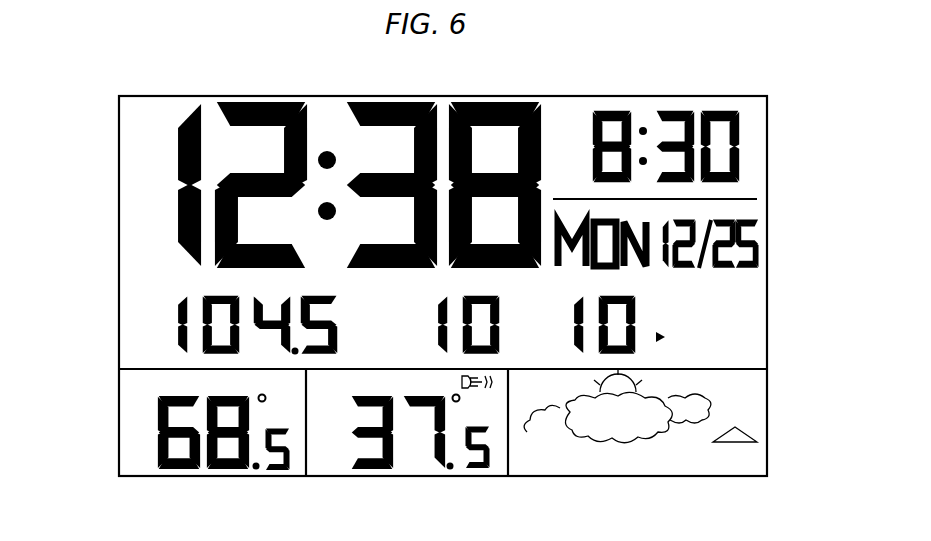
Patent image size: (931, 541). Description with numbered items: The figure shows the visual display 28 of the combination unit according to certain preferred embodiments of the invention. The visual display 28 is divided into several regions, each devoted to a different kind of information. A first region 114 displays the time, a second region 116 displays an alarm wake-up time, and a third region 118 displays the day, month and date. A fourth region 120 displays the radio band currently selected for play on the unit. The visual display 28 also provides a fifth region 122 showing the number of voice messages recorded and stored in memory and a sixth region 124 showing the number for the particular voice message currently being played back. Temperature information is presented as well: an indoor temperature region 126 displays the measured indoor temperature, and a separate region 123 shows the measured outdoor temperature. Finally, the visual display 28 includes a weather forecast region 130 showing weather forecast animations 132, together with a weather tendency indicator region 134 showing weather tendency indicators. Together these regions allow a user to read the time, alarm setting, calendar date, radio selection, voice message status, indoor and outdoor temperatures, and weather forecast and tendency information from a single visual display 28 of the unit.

The visual display 28 is at (41, 193).
The first region 114 is at (322, 108).
The second region 116 is at (752, 116).
The third region 118 is at (756, 234).
The fourth region 120 is at (153, 303).
The fifth region 122 is at (503, 302).
The outdoor temperature display 123 is at (325, 468).
The sixth region 124 is at (650, 309).
The indoor temperature region 126 is at (136, 468).
The weather forecast region 130 is at (548, 466).
The weather forecast animations 132 is at (618, 437).
The weather tendency indicator region 134 is at (742, 432).